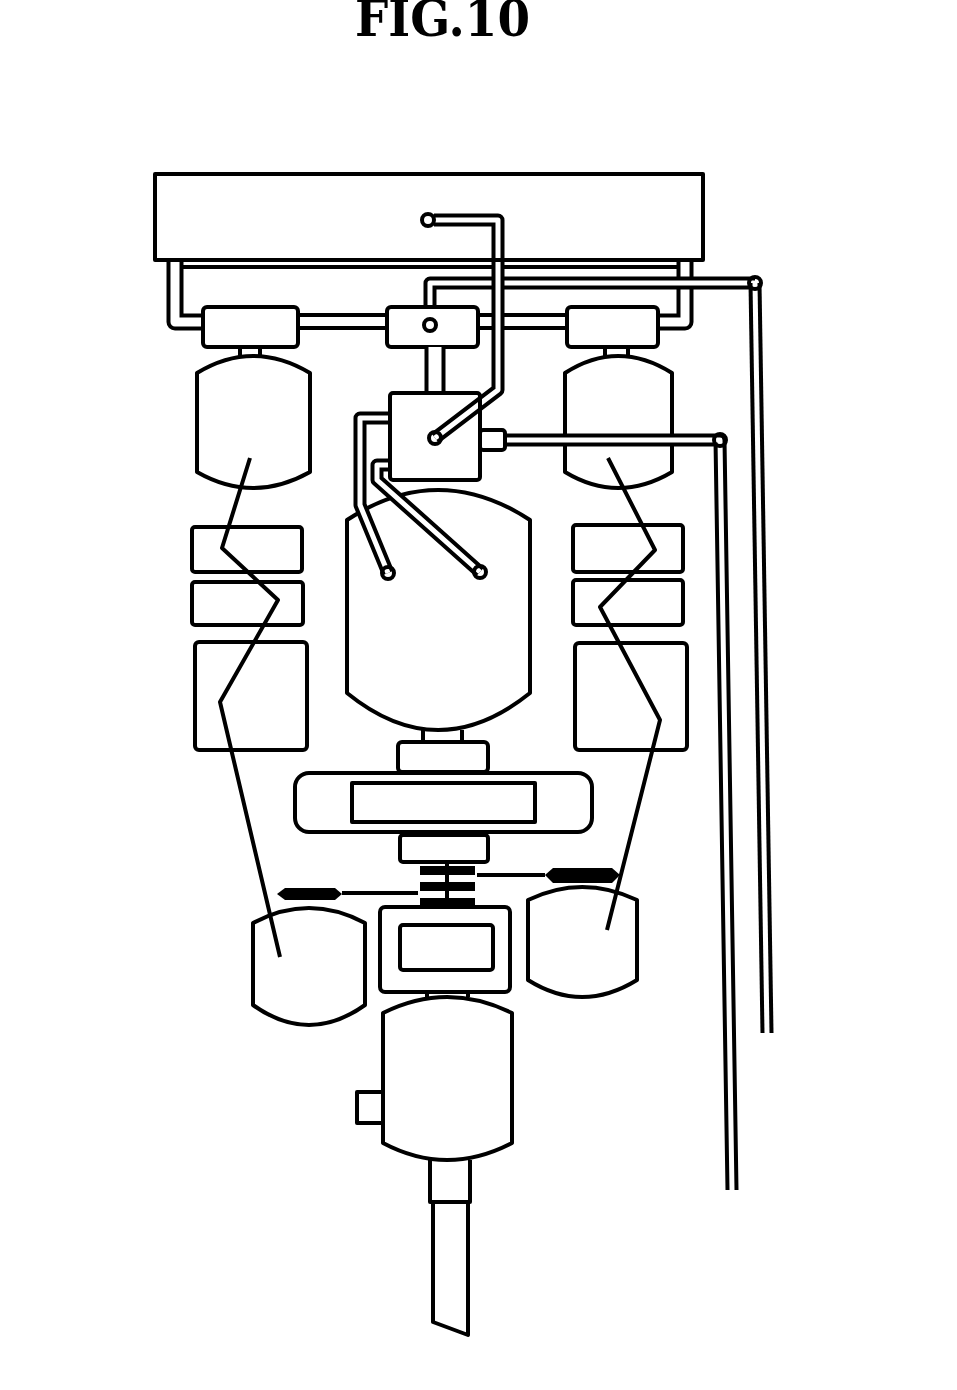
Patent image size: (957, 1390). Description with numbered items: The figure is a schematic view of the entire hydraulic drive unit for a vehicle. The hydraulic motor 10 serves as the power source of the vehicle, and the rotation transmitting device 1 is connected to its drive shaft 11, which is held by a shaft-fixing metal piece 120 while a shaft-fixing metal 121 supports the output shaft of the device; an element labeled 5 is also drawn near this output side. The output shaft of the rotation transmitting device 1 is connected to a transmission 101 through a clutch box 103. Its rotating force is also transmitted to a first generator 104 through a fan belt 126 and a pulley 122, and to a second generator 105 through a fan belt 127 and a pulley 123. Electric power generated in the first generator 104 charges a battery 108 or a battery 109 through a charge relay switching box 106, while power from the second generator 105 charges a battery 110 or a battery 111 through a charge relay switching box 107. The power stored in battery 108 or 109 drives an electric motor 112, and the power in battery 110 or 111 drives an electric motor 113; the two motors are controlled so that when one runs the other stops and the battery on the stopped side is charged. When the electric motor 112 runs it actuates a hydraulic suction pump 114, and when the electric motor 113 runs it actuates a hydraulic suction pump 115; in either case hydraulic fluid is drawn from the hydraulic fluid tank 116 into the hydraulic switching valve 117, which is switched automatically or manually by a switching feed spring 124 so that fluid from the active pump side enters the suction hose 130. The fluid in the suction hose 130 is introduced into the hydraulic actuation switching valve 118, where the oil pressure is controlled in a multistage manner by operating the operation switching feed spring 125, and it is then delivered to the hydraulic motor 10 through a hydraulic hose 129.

The rotation transmitting device 1 is at (590, 803).
The bellows 5 is at (418, 893).
The hydraulic motor 10 is at (533, 530).
The drive shaft 11 is at (407, 736).
The transmission 101 is at (512, 1097).
The clutch box 103 is at (510, 990).
The first generator 104 is at (258, 973).
The second generator 105 is at (637, 955).
The charge relay switching box 106 is at (195, 680).
The charge relay switching box 107 is at (687, 687).
The battery 108 is at (192, 607).
The battery 109 is at (192, 550).
The battery 110 is at (683, 602).
The battery 111 is at (683, 548).
The electric motor 112 is at (197, 420).
The electric motor 113 is at (672, 400).
The hydraulic suction pump 114 is at (203, 307).
The hydraulic suction pump 115 is at (660, 341).
The hydraulic fluid tank 116 is at (155, 210).
The hydraulic switching valve 117 is at (403, 305).
The hydraulic actuation switching valve 118 is at (483, 418).
The shaft-fixing metal piece 120 is at (488, 755).
The shaft-fixing metal 121 is at (488, 850).
The pulley 122 is at (277, 895).
The pulley 123 is at (620, 874).
The switching feed spring 124 is at (773, 1002).
The operation switching feed spring 125 is at (743, 1135).
The fan belt 126 is at (367, 893).
The fan belt 127 is at (545, 872).
The hydraulic hose 129 is at (357, 470).
The suction hose 130 is at (425, 370).